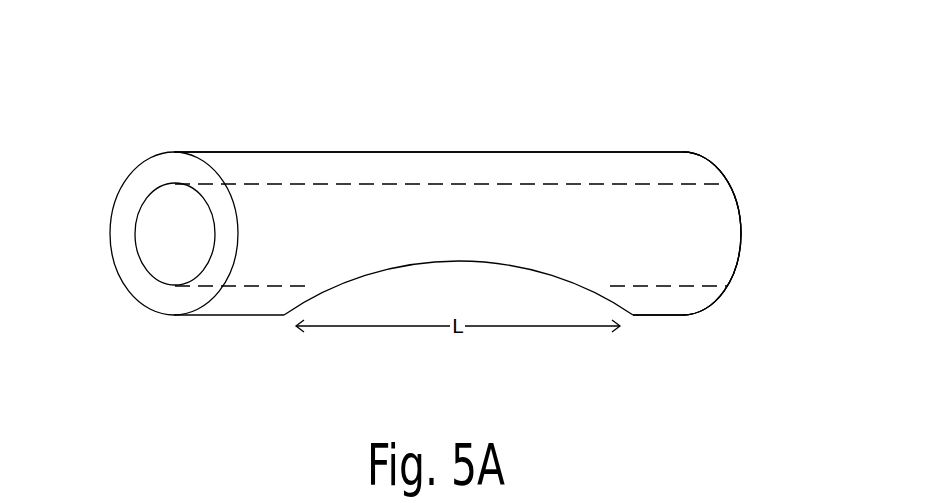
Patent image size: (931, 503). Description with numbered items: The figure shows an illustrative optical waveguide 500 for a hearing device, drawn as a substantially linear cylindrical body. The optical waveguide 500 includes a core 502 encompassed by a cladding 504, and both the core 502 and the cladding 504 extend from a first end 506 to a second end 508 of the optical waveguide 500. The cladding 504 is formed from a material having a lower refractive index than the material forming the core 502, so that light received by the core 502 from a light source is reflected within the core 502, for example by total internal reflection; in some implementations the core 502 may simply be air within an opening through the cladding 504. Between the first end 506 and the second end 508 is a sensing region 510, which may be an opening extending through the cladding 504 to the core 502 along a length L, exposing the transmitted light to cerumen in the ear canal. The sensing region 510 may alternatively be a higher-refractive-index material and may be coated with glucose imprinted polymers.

The optical waveguide 500 is at (226, 84).
The core 502 is at (176, 234).
The cladding 504 is at (557, 151).
The first end 506 is at (112, 230).
The second end 508 is at (742, 230).
The sensing region 510 is at (373, 271).